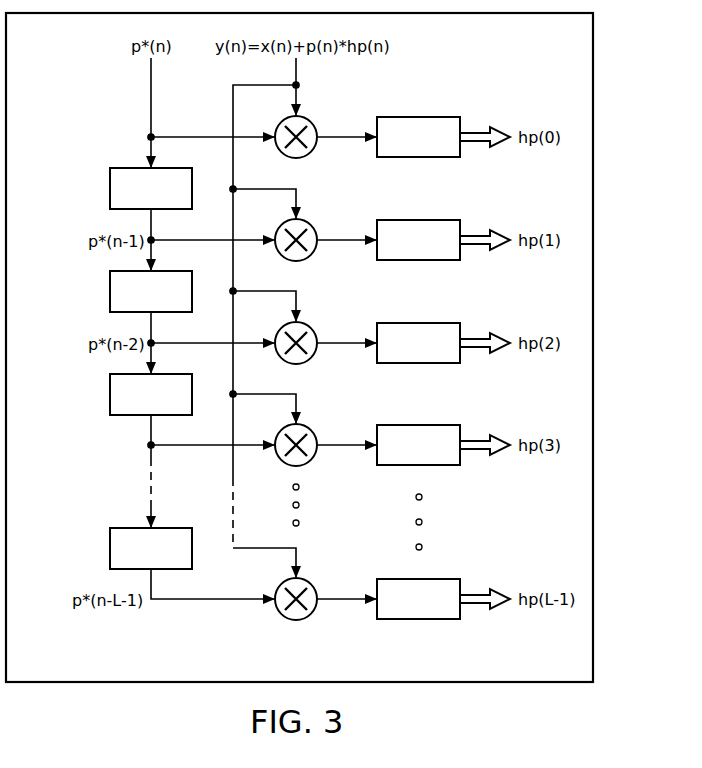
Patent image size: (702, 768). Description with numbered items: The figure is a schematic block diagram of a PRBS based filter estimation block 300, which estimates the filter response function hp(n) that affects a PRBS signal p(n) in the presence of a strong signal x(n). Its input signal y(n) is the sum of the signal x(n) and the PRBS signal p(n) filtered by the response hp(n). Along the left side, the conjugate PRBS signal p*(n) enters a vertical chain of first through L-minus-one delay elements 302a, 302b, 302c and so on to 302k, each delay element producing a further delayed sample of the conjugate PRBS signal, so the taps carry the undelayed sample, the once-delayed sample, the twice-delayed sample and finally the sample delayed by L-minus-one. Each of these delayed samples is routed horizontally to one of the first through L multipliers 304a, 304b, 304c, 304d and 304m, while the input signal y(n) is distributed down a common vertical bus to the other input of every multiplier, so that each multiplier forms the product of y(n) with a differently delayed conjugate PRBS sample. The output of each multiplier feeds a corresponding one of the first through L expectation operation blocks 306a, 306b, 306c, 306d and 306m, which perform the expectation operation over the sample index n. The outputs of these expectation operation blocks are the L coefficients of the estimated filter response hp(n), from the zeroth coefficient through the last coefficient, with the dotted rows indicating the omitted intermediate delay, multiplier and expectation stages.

The PRBS based filter estimation block 300 is at (599, 396).
The first delay element 302a is at (110, 186).
The second delay element 302b is at (110, 289).
The third delay element 302c is at (110, 391).
The L-1 delay element 302k is at (110, 546).
The first multiplier 304a is at (335, 104).
The second multiplier 304b is at (335, 207).
The third multiplier 304c is at (335, 310).
The fourth multiplier 304d is at (310, 461).
The L multiplier 304m is at (300, 619).
The first expectation operation block 306a is at (419, 117).
The second expectation operation block 306b is at (419, 220).
The third expectation operation block 306c is at (419, 323).
The fourth expectation operation block 306d is at (419, 425).
The L expectation operation block 306m is at (417, 620).